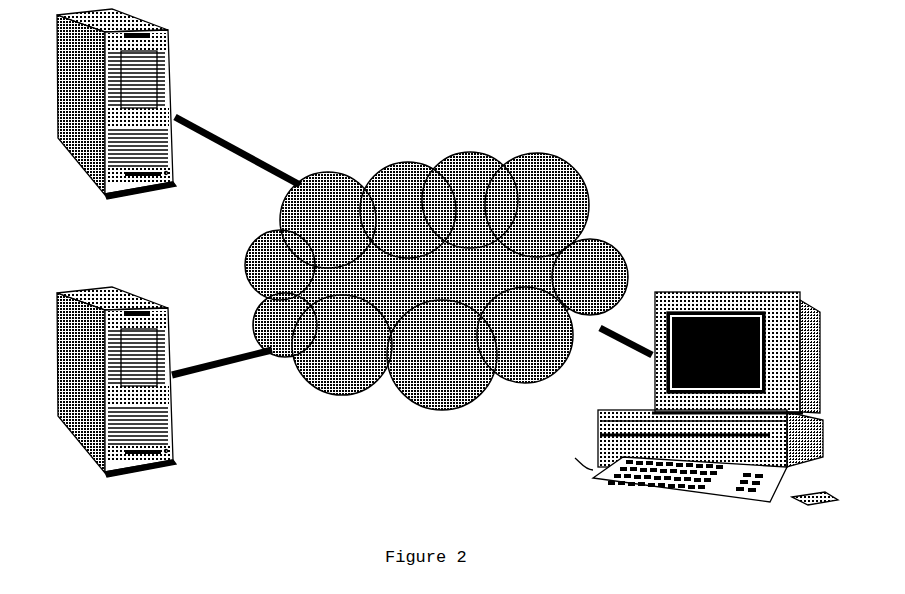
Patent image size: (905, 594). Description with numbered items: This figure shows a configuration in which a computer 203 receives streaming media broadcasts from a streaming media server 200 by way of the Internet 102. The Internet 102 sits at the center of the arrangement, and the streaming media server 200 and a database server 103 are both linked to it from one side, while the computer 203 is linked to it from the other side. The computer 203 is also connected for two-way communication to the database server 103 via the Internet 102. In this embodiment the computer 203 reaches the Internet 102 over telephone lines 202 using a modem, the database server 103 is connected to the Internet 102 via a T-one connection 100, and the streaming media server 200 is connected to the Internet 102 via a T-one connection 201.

The streaming media server 200 is at (160, 99).
The T-1 connection 201 is at (280, 165).
The Internet 102 is at (463, 155).
The telephone lines 202 is at (627, 333).
The computer 203 is at (733, 303).
The database server 103 is at (140, 385).
The T-1 connection 100 is at (220, 368).